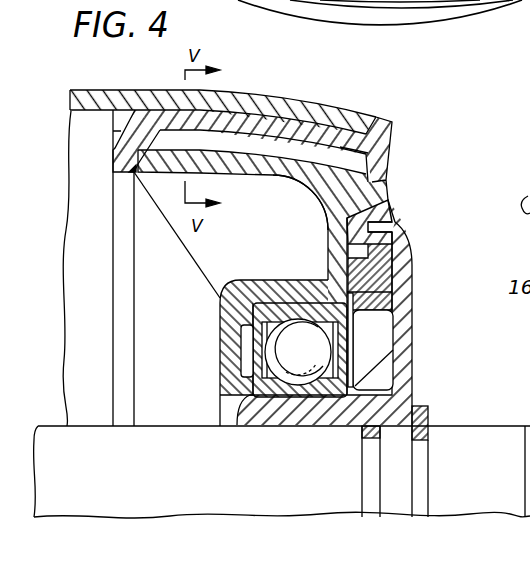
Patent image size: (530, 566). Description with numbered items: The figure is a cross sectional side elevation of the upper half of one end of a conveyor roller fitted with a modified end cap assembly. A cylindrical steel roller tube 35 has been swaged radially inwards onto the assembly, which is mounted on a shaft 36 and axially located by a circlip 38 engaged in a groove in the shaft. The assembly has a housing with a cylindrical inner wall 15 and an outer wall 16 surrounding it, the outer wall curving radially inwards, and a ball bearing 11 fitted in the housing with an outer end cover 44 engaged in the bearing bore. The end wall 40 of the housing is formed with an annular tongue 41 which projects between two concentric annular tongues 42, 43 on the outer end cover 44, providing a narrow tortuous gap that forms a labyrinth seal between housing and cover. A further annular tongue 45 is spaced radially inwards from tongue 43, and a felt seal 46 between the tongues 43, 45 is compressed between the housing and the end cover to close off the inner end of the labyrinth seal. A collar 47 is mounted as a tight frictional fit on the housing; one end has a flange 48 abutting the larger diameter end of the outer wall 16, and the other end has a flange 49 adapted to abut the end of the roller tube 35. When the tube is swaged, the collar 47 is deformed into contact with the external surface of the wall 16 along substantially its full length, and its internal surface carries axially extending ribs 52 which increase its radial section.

The ball bearing 11 is at (349, 354).
The inner wall 15 is at (268, 280).
The outer wall 16 is at (280, 178).
The roller tube 35 is at (233, 92).
The shaft 36 is at (478, 425).
The circlip 38 is at (422, 408).
The end wall 40 is at (328, 230).
The annular tongue 41 is at (373, 230).
The annular tongue 42 is at (379, 197).
The annular tongue 43 is at (378, 247).
The outer end cover 44 is at (409, 343).
The annular tongue 45 is at (376, 301).
The felt seal 46 is at (384, 277).
The collar 47 is at (297, 112).
The flange 48 is at (117, 157).
The flange 49 is at (396, 128).
The ribs 52 is at (376, 166).